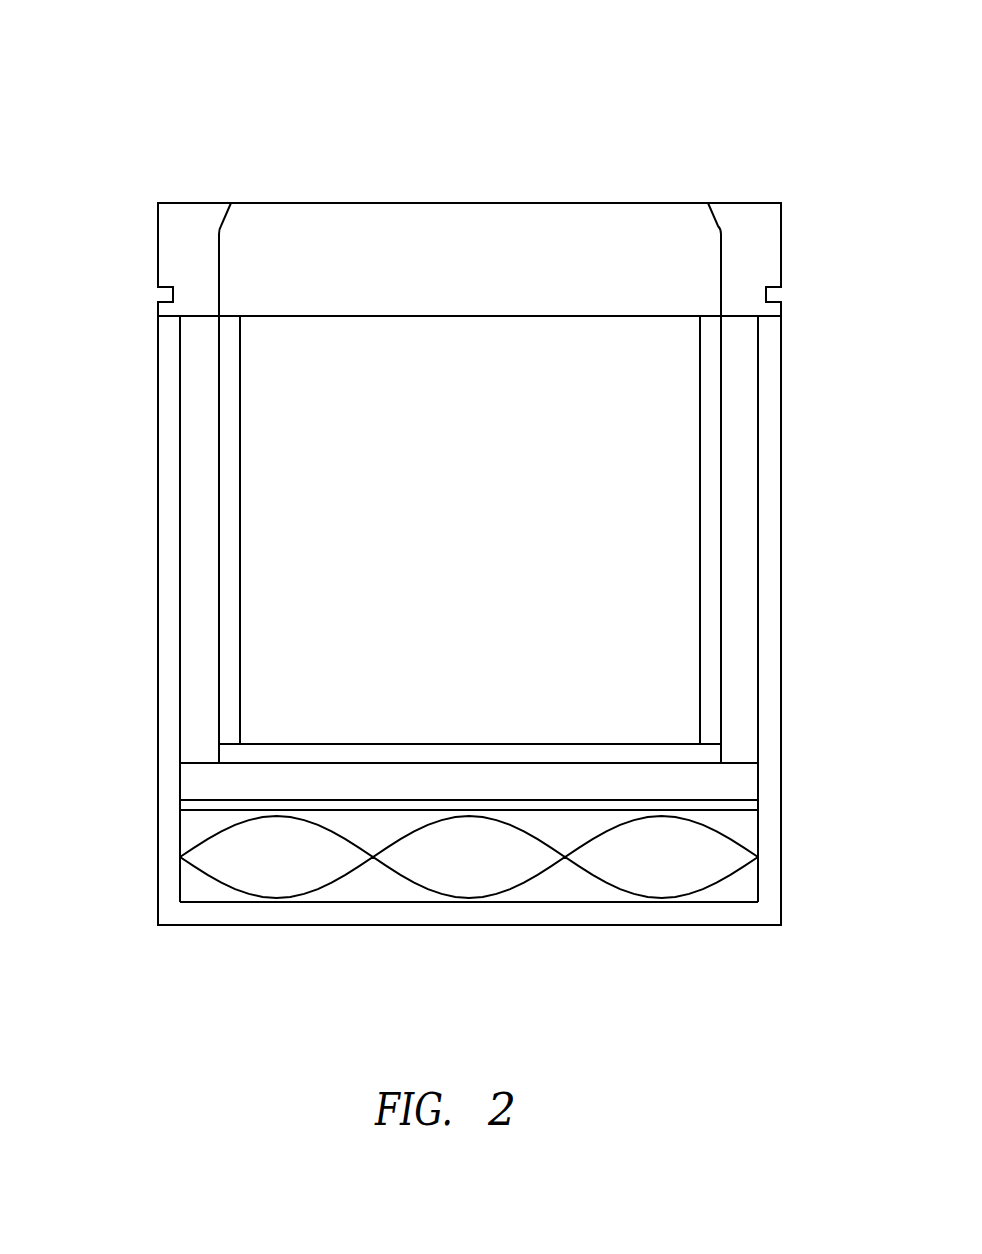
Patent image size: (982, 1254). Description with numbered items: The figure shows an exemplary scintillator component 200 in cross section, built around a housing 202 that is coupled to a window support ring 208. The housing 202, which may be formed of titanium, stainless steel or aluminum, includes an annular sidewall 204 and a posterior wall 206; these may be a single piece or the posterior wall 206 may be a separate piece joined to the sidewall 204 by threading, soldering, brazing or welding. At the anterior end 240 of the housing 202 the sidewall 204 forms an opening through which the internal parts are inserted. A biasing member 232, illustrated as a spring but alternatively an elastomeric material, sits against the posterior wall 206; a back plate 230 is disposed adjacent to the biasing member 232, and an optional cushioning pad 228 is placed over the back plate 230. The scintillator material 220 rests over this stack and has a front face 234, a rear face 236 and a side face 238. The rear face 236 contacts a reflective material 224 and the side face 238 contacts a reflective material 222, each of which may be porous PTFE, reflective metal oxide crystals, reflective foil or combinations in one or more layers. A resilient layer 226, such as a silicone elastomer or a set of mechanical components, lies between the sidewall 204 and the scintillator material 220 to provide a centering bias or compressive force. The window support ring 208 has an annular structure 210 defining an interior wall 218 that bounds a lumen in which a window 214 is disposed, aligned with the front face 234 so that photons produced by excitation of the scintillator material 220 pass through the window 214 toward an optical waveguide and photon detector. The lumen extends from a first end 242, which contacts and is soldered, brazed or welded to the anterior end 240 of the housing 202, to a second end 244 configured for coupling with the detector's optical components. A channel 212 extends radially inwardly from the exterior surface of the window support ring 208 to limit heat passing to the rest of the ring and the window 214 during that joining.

The scintillator component 200 is at (116, 56).
The housing 202 is at (783, 553).
The sidewall 204 is at (769, 635).
The posterior wall 206 is at (697, 920).
The window support ring 208 is at (787, 252).
The annular structure 210 is at (776, 223).
The channel 212 is at (777, 297).
The window 214 is at (362, 222).
The interior wall 218 is at (217, 258).
The scintillator material 220 is at (262, 530).
The reflective material 222 is at (230, 585).
The reflective material 224 is at (232, 753).
The resilient layer 226 is at (190, 673).
The cushioning pad 228 is at (187, 787).
The back plate 230 is at (182, 805).
The biasing member 232 is at (213, 873).
The front face 234 is at (603, 315).
The rear face 236 is at (460, 744).
The side face 238 is at (700, 438).
The anterior end 240 is at (157, 318).
The first end 242 is at (190, 313).
The second end 244 is at (196, 202).